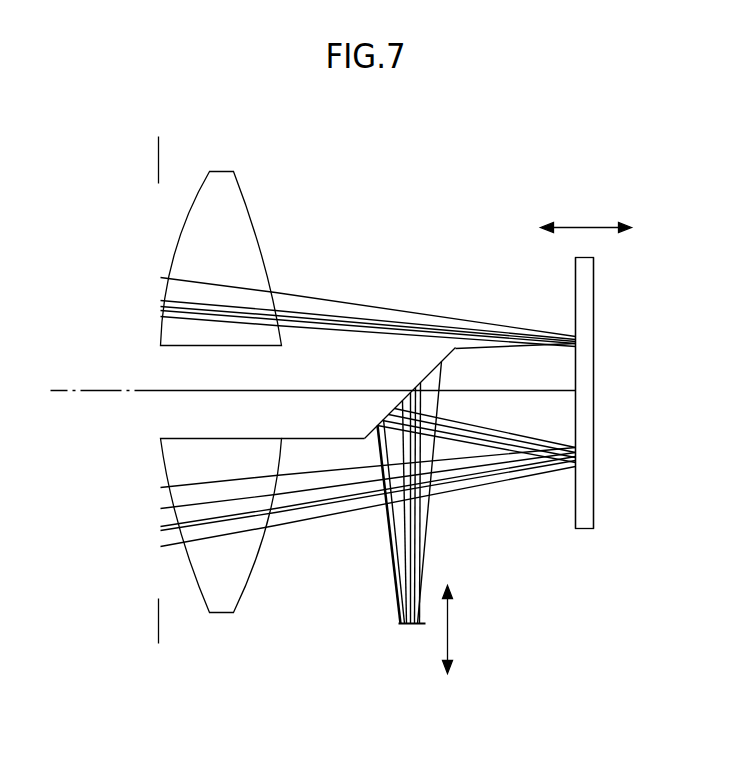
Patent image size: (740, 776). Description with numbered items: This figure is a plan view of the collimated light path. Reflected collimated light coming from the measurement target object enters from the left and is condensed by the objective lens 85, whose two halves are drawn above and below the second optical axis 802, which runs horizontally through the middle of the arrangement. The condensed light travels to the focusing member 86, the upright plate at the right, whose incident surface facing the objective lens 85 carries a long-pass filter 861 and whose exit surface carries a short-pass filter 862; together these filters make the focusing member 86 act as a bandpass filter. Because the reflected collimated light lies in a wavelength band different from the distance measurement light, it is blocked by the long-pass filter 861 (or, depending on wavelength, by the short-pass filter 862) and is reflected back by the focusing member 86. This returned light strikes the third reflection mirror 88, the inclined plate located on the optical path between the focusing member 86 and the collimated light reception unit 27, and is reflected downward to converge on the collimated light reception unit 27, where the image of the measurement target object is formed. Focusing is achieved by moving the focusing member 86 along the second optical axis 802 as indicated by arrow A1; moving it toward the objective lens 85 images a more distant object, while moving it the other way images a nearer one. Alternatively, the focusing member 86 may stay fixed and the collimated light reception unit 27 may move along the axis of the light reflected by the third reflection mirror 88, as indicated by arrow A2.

The second optical axis 802 is at (66, 390).
The objective lens 85 is at (242, 640).
The third reflection mirror 88 is at (438, 371).
The focusing member 86 is at (583, 305).
The long-pass filter 861 is at (571, 512).
The short-pass filter 862 is at (601, 512).
The collimated light reception unit 27 is at (410, 628).
The arrow A1 is at (580, 224).
The arrow A2 is at (448, 628).